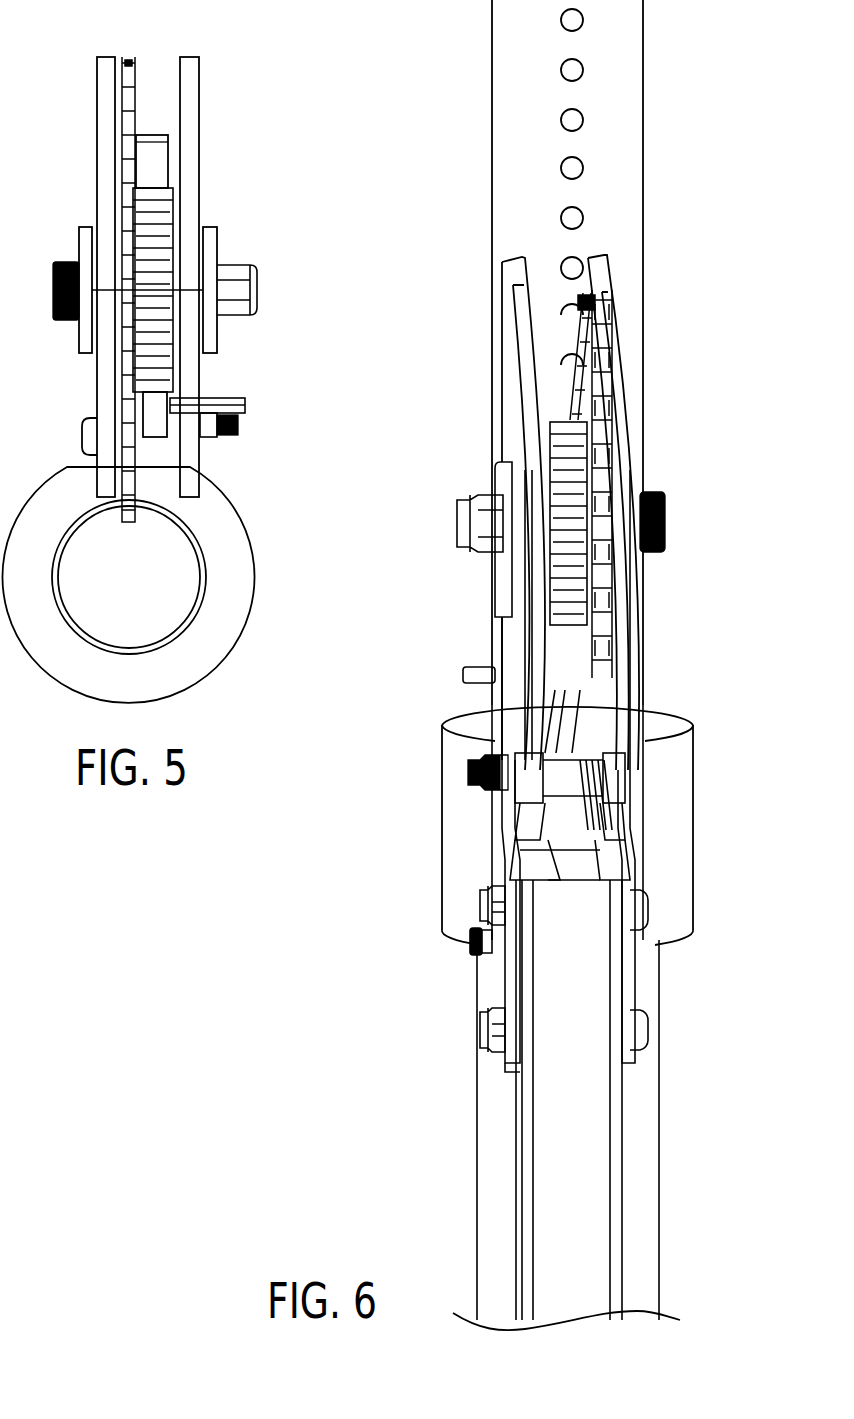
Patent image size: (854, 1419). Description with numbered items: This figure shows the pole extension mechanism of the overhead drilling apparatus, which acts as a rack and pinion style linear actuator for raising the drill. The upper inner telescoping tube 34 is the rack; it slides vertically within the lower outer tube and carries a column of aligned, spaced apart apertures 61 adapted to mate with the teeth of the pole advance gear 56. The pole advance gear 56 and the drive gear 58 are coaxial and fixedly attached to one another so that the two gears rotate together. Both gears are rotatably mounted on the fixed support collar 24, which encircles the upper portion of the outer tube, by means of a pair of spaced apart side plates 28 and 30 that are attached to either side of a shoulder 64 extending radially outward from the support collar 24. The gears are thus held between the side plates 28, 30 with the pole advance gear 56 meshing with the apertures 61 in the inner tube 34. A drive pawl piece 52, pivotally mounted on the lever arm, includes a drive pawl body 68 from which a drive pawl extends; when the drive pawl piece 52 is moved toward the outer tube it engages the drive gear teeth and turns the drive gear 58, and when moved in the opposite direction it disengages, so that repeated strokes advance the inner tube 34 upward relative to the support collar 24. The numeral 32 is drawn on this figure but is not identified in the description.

In FIG. 6, the fixed support collar 24 is at (672, 818).
In FIG. 5, the side plate 28 is at (107, 137).
In FIG. 6, the side plate 28 is at (617, 338).
In FIG. 5, the side plate 30 is at (192, 143).
In FIG. 6, the side plate 30 is at (537, 362).
In FIG. 5, the bolt 32 is at (86, 437).
In FIG. 6, the bolt 32 is at (470, 772).
In FIG. 6, the upper inner telescoping tube 34 is at (503, 118).
In FIG. 6, the drive pawl piece 52 is at (573, 733).
In FIG. 6, the pole advance gear 56 is at (607, 672).
In FIG. 6, the drive gear 58 is at (567, 480).
In FIG. 6, the apertures 61 is at (582, 118).
In FIG. 5, the shoulder 64 is at (155, 442).
In FIG. 6, the drive pawl body 68 is at (667, 522).